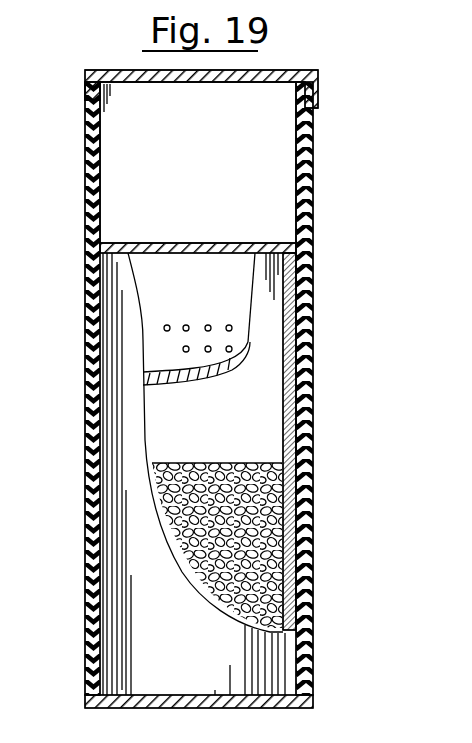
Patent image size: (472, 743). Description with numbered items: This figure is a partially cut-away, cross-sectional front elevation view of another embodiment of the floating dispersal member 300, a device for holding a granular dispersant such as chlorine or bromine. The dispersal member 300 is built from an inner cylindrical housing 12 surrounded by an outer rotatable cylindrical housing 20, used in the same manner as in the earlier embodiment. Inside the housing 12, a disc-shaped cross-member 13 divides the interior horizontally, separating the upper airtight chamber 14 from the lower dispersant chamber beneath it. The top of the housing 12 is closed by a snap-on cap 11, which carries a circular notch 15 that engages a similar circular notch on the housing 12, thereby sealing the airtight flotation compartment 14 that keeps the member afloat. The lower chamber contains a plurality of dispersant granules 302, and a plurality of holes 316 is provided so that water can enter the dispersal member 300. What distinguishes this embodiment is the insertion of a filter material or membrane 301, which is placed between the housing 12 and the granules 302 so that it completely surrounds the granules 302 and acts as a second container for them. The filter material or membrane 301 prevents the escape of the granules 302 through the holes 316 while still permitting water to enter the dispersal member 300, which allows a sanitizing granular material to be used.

The snap-on cap 11 is at (318, 88).
The inner cylindrical housing 12 is at (294, 163).
The disc-shaped cross-member 13 is at (195, 243).
The airtight chamber 14 is at (192, 170).
The circular notch 15 is at (88, 97).
The outer rotatable cylindrical housing 20 is at (313, 340).
The floating dispersal member 300 is at (328, 244).
The filter material or membrane 301 is at (140, 549).
The dispersant granules 302 is at (236, 462).
The holes 316 is at (167, 324).